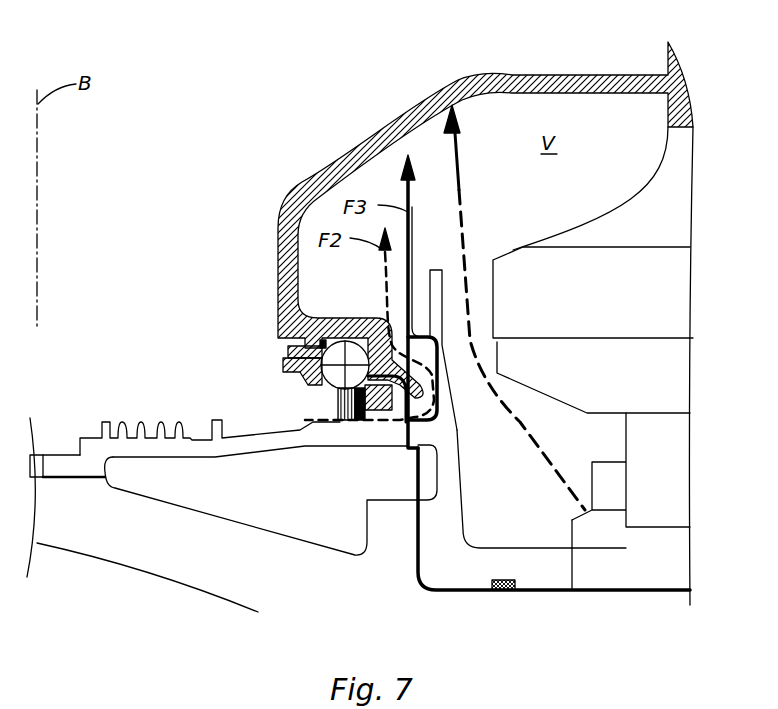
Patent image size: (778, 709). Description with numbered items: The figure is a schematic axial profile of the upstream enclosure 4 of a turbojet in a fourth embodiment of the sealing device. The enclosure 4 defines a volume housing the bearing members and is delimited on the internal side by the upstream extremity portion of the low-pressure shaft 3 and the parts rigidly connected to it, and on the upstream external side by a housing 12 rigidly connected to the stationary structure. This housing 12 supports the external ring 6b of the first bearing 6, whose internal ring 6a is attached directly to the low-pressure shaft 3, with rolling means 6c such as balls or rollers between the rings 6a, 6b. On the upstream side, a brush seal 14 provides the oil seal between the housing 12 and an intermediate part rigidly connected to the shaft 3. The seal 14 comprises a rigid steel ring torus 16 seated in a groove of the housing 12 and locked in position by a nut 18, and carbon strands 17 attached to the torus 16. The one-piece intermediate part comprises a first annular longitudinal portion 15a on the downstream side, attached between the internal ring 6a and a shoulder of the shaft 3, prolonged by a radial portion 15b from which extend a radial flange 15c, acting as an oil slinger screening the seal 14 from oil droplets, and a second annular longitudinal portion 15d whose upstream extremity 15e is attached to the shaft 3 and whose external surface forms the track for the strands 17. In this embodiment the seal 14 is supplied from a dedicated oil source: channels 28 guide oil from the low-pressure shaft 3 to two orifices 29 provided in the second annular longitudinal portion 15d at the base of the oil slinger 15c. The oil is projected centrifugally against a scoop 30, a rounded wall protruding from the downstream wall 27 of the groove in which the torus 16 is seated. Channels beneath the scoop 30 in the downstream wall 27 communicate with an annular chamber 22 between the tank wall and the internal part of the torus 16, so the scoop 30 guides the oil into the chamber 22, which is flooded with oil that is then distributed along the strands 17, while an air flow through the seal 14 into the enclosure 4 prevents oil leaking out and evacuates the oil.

The low-pressure shaft 3 is at (185, 558).
The upstream enclosure 4 is at (436, 170).
The first bearing 6 is at (606, 441).
The internal ring 6a is at (660, 555).
The external ring 6b is at (660, 373).
The rolling means 6c is at (660, 466).
The housing 12 is at (573, 80).
The brush seal 14 is at (323, 386).
The first annular longitudinal portion 15a is at (540, 578).
The radial portion 15b is at (438, 528).
The radial flange 15c is at (442, 297).
The second annular longitudinal portion 15d is at (350, 445).
The upstream extremity 15e is at (113, 440).
The ring torus 16 is at (305, 360).
The strands 17 is at (340, 410).
The nut 18 is at (300, 347).
The annular chamber 22 is at (368, 422).
The downstream wall 27 is at (376, 330).
The channels 28 is at (415, 555).
The orifices 29 is at (428, 408).
The scoop 30 is at (372, 377).